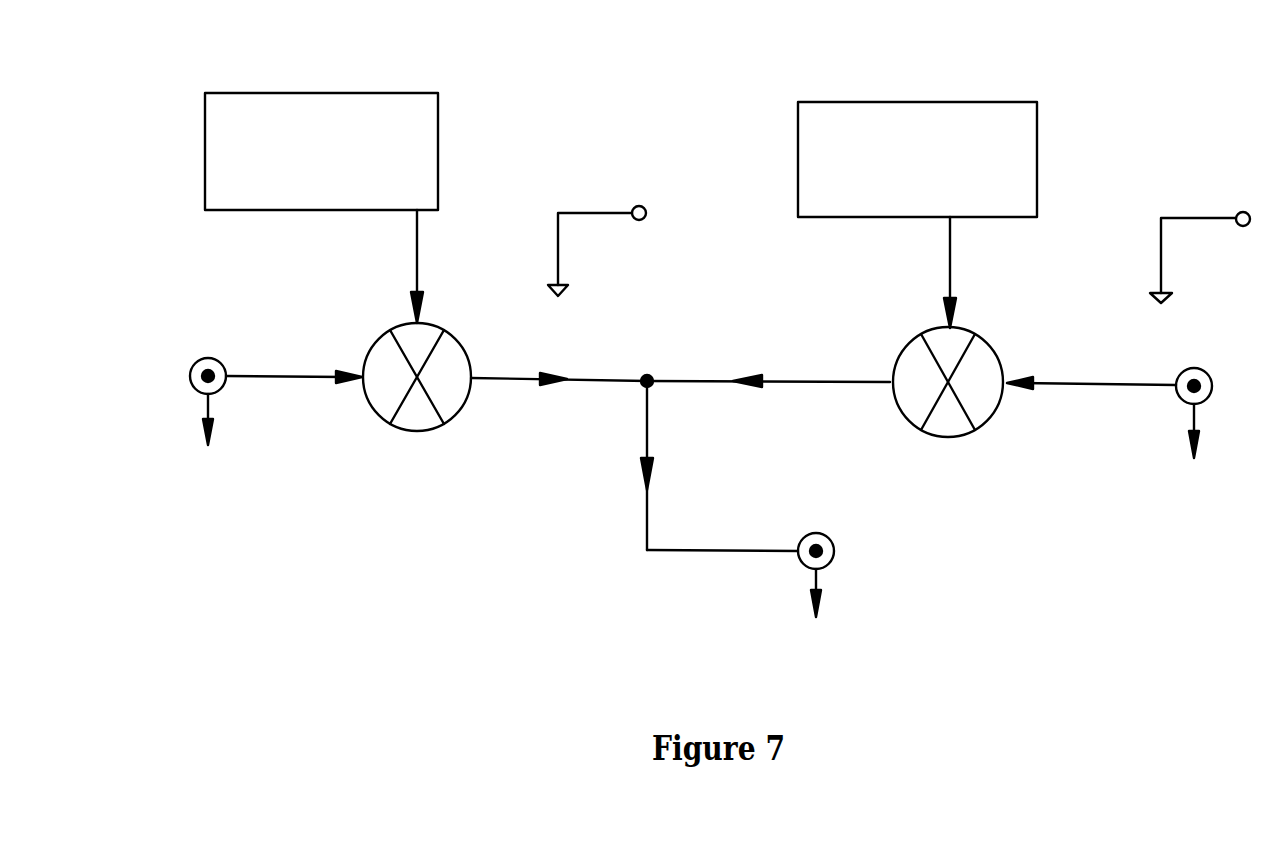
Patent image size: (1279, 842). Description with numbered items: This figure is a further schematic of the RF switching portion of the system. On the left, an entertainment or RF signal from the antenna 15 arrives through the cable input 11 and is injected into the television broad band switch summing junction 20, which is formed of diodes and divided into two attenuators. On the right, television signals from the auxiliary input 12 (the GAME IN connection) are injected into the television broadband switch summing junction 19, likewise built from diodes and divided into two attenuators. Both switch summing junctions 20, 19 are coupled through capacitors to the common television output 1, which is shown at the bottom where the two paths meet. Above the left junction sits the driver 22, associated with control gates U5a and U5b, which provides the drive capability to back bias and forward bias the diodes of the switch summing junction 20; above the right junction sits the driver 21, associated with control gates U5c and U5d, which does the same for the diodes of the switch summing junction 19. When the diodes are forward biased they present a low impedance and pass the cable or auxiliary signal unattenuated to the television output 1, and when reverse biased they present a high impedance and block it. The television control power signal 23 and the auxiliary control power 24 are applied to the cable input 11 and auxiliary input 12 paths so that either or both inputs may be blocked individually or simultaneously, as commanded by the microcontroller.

The driver 22 is at (363, 93).
The driver 21 is at (968, 102).
The television broad band switch summing junction 20 is at (408, 431).
The television broadband switch summing junction 19 is at (947, 437).
The antenna 15 is at (168, 372).
The cable input 11 is at (207, 354).
The auxiliary input 12 is at (1203, 368).
The television output 1 is at (829, 531).
The television control power signal 23 is at (578, 232).
The auxiliary control power 24 is at (1178, 233).